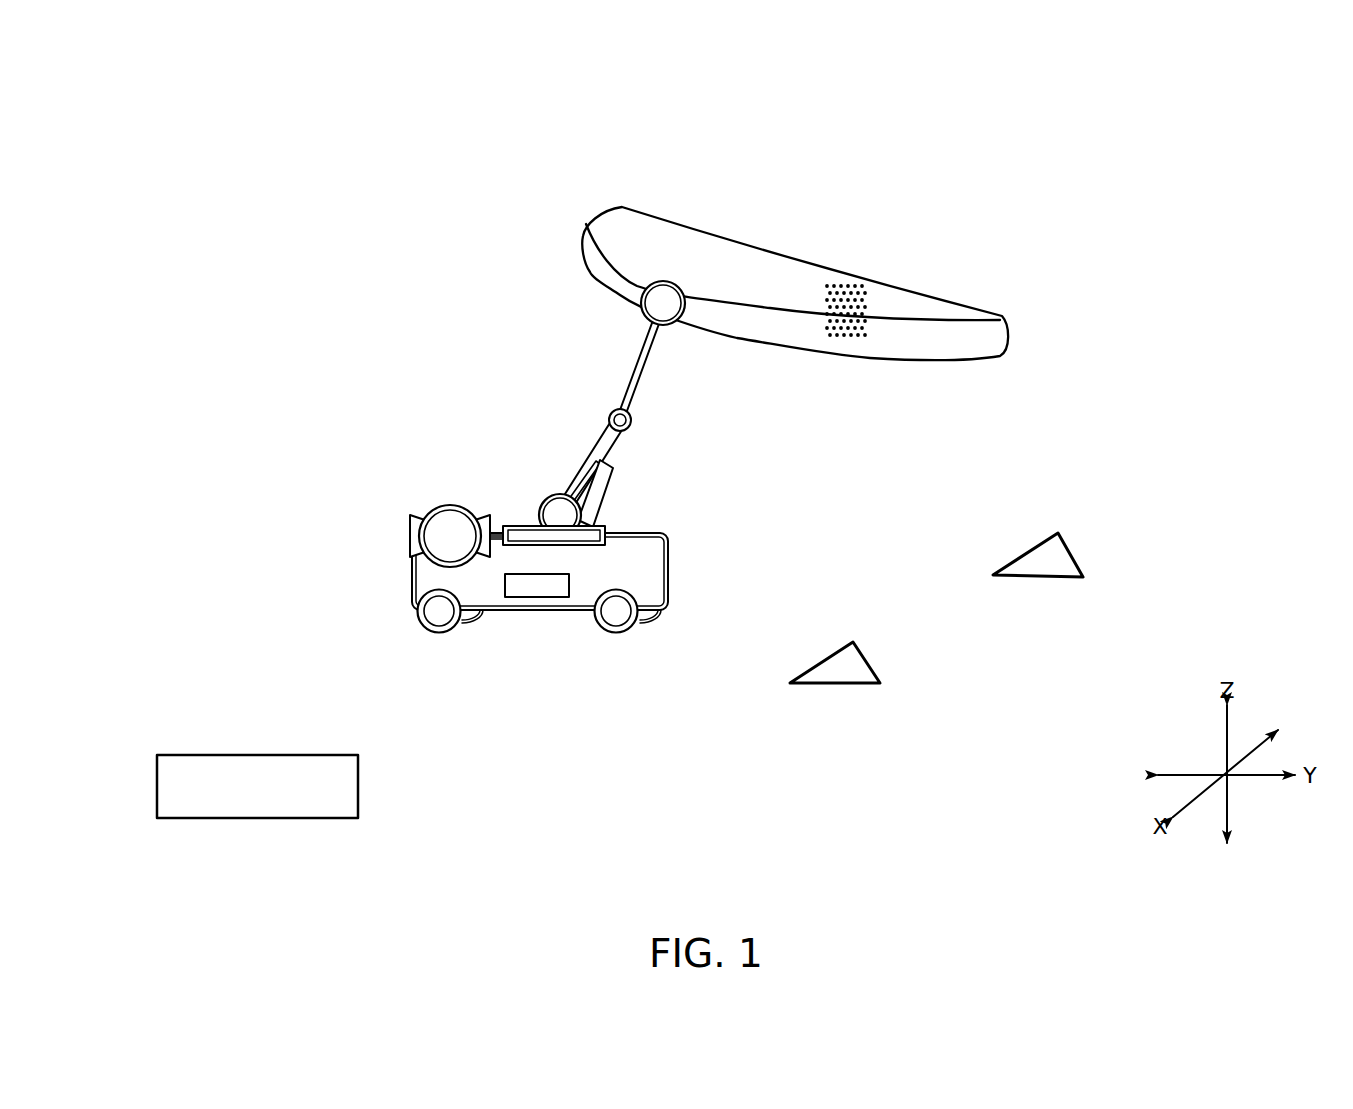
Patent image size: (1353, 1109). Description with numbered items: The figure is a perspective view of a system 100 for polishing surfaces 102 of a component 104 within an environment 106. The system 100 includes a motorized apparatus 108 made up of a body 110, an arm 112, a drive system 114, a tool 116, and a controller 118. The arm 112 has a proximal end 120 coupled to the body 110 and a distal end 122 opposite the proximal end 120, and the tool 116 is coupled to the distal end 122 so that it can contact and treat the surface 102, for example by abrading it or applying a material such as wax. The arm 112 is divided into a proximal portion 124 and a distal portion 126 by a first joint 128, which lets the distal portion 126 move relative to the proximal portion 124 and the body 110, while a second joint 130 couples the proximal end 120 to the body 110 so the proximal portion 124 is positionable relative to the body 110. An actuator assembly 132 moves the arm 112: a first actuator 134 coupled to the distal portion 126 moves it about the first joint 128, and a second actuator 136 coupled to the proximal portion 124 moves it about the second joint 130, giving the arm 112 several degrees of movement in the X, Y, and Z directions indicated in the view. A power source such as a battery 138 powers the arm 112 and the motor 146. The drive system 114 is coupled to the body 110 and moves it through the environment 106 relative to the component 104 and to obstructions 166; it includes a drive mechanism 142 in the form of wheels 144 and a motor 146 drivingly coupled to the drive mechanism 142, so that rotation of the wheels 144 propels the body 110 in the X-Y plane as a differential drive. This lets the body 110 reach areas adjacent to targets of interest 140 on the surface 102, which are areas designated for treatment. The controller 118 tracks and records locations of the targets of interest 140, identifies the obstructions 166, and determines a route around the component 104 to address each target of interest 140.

The system 100 is at (1015, 131).
The surface 102 is at (697, 231).
The component 104 is at (792, 255).
The environment 106 is at (1109, 449).
The motorized apparatus 108 is at (424, 504).
The body 110 is at (656, 575).
The arm 112 is at (600, 408).
The drive system 114 is at (396, 578).
The tool 116 is at (655, 283).
The controller 118 is at (157, 785).
The proximal end 120 is at (528, 518).
The distal end 122 is at (634, 320).
The proximal portion 124 is at (622, 456).
The distal portion 126 is at (655, 361).
The first joint 128 is at (633, 417).
The second joint 130 is at (542, 499).
The actuator assembly 132 is at (630, 494).
The first actuator 134 is at (612, 478).
The second actuator 136 is at (575, 490).
The battery 138 is at (527, 600).
The targets of interest 140 is at (855, 288).
The drive mechanism 142 is at (640, 640).
The wheels 144 is at (614, 633).
The motor 146 is at (408, 531).
The obstructions 166 is at (868, 655).